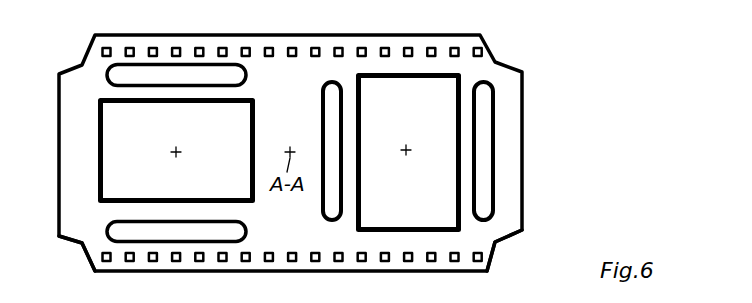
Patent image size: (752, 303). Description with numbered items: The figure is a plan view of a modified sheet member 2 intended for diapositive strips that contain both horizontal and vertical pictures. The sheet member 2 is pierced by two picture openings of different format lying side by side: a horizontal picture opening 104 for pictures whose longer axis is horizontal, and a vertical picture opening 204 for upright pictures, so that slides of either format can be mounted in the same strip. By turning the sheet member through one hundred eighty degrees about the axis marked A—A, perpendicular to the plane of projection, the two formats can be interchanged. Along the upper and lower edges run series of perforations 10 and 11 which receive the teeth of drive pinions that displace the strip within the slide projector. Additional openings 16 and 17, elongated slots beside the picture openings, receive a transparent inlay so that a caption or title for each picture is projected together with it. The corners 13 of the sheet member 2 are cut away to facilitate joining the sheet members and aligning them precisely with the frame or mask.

The sheet member 2 is at (512, 175).
The corner 13 is at (72, 242).
The perforations 10 is at (290, 50).
The perforations 11 is at (268, 262).
The additional opening 16 is at (234, 72).
The additional opening 17 is at (250, 233).
The horizontal picture opening 104 is at (245, 193).
The vertical picture opening 204 is at (455, 192).